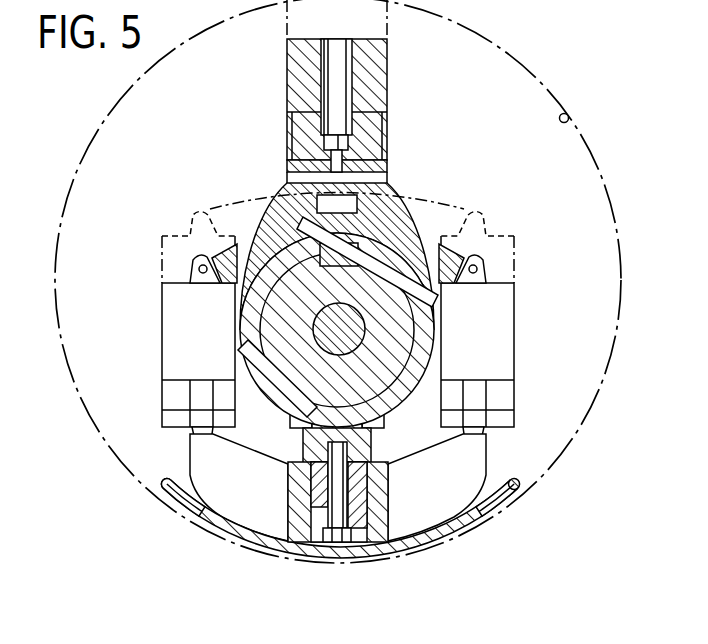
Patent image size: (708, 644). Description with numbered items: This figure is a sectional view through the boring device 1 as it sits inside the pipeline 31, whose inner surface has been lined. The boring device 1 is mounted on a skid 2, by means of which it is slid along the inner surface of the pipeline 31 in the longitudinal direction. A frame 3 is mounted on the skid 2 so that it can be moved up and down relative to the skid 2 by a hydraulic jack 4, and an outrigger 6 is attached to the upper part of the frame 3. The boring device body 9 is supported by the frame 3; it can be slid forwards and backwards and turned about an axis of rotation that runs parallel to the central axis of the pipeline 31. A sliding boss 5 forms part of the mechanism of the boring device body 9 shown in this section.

The boring device 1 is at (489, 137).
The skid 2 is at (200, 528).
The frame 3 is at (286, 232).
The hydraulic jack 4 is at (162, 312).
The sliding boss 5 is at (366, 553).
The outrigger 6 is at (374, 88).
The boring device body 9 is at (427, 243).
The pipeline 31 is at (569, 121).